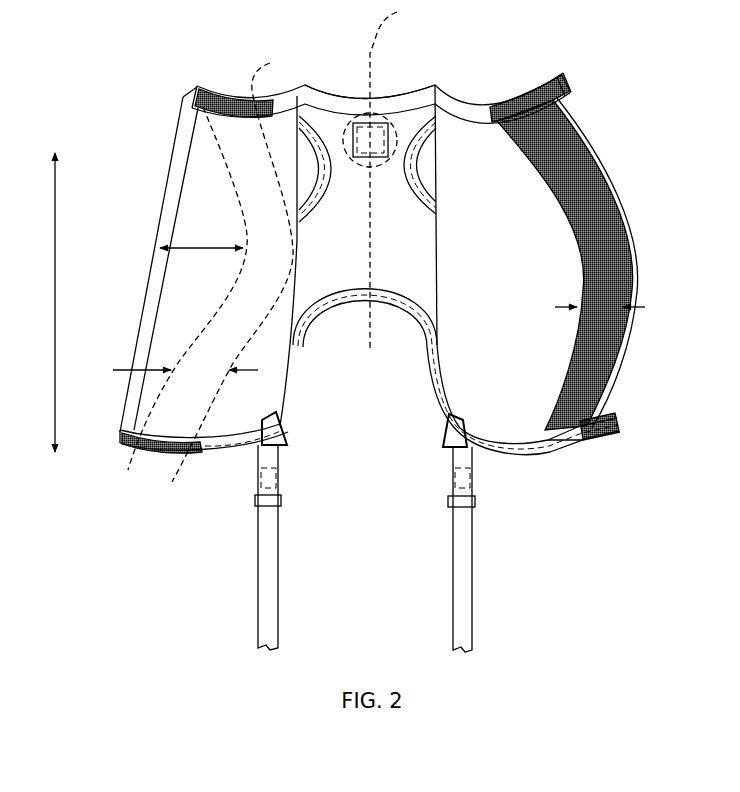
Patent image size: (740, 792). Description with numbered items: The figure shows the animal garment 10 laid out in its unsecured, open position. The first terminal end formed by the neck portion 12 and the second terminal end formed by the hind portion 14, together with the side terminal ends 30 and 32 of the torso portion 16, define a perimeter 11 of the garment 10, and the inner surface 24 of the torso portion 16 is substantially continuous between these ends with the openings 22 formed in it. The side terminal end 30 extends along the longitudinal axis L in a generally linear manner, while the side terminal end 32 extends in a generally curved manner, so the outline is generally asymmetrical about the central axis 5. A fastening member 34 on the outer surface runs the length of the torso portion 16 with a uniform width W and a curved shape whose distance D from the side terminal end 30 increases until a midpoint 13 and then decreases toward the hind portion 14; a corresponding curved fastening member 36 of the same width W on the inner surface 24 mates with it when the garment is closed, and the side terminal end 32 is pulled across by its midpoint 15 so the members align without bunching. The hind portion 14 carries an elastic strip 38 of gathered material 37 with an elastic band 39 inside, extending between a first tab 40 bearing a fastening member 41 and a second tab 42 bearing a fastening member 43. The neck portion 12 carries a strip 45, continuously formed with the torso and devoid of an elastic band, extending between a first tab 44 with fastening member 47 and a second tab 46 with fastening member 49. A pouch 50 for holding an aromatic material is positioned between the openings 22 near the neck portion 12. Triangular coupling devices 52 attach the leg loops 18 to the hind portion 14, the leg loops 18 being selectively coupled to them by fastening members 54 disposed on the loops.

The garment 10 is at (123, 122).
The perimeter 11 is at (181, 108).
The neck portion 12 is at (430, 85).
The midpoint 13 is at (300, 253).
The hind portion 14 is at (200, 463).
The midpoint 15 is at (595, 201).
The torso portion 16 is at (643, 272).
The leg loops 18 is at (283, 513).
The openings 22 is at (317, 173).
The inner surface 24 is at (542, 180).
The side terminal end 30 is at (143, 293).
The side terminal end 32 is at (632, 229).
The fastening member 34 is at (263, 176).
The fastening member 36 is at (578, 188).
The gathered material 37 is at (422, 331).
The elastic strip 38 is at (380, 294).
The elastic band 39 is at (430, 313).
The first tab 40 is at (135, 448).
The fastening member 41 is at (172, 470).
The second tab 42 is at (578, 442).
The fastening member 43 is at (606, 430).
The first tab 44 is at (197, 88).
The strip 45 is at (405, 100).
The second tab 46 is at (566, 84).
The fastening member 47 is at (233, 267).
The fastening member 49 is at (547, 83).
The pouch 50 is at (351, 122).
The central axis 5 is at (391, 175).
The coupling devices 52 is at (284, 420).
The fastening members 54 is at (278, 480).
The longitudinal axis L is at (55, 338).
The distance D is at (200, 248).
The width W is at (125, 370).